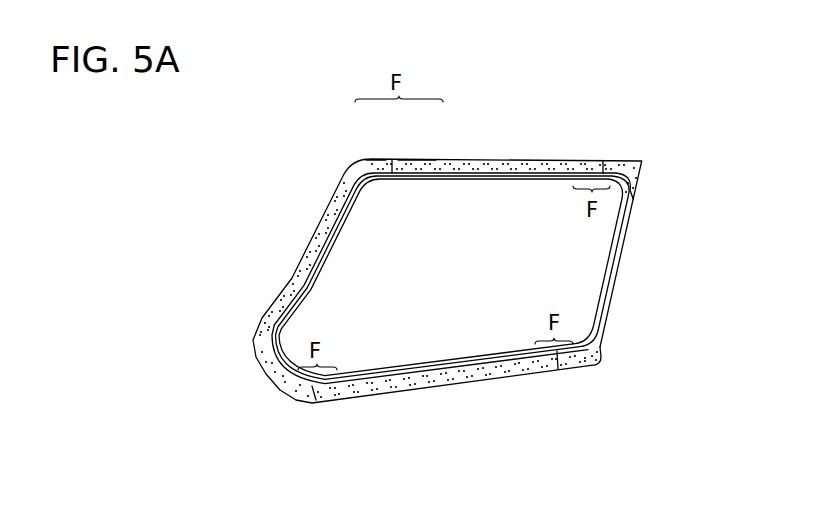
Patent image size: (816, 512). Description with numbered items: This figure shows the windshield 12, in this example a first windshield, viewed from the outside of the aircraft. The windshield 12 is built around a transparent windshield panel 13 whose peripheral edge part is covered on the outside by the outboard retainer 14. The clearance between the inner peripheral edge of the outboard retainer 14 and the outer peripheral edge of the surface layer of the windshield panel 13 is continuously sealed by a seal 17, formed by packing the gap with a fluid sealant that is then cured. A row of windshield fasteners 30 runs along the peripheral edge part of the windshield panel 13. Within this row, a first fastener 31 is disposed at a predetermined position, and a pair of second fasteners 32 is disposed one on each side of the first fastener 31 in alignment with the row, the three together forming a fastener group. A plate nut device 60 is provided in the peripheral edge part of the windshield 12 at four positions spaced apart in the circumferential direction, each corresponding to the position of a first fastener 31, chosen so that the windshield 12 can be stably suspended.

The windshield 12 is at (578, 150).
The windshield panel 13 is at (587, 247).
The outboard retainer 14 is at (313, 222).
The seal 17 is at (608, 298).
The windshield fasteners 30 is at (500, 160).
The first fastener 31 is at (392, 160).
The second fasteners 32 is at (379, 160).
The plate nut device 60 is at (389, 178).